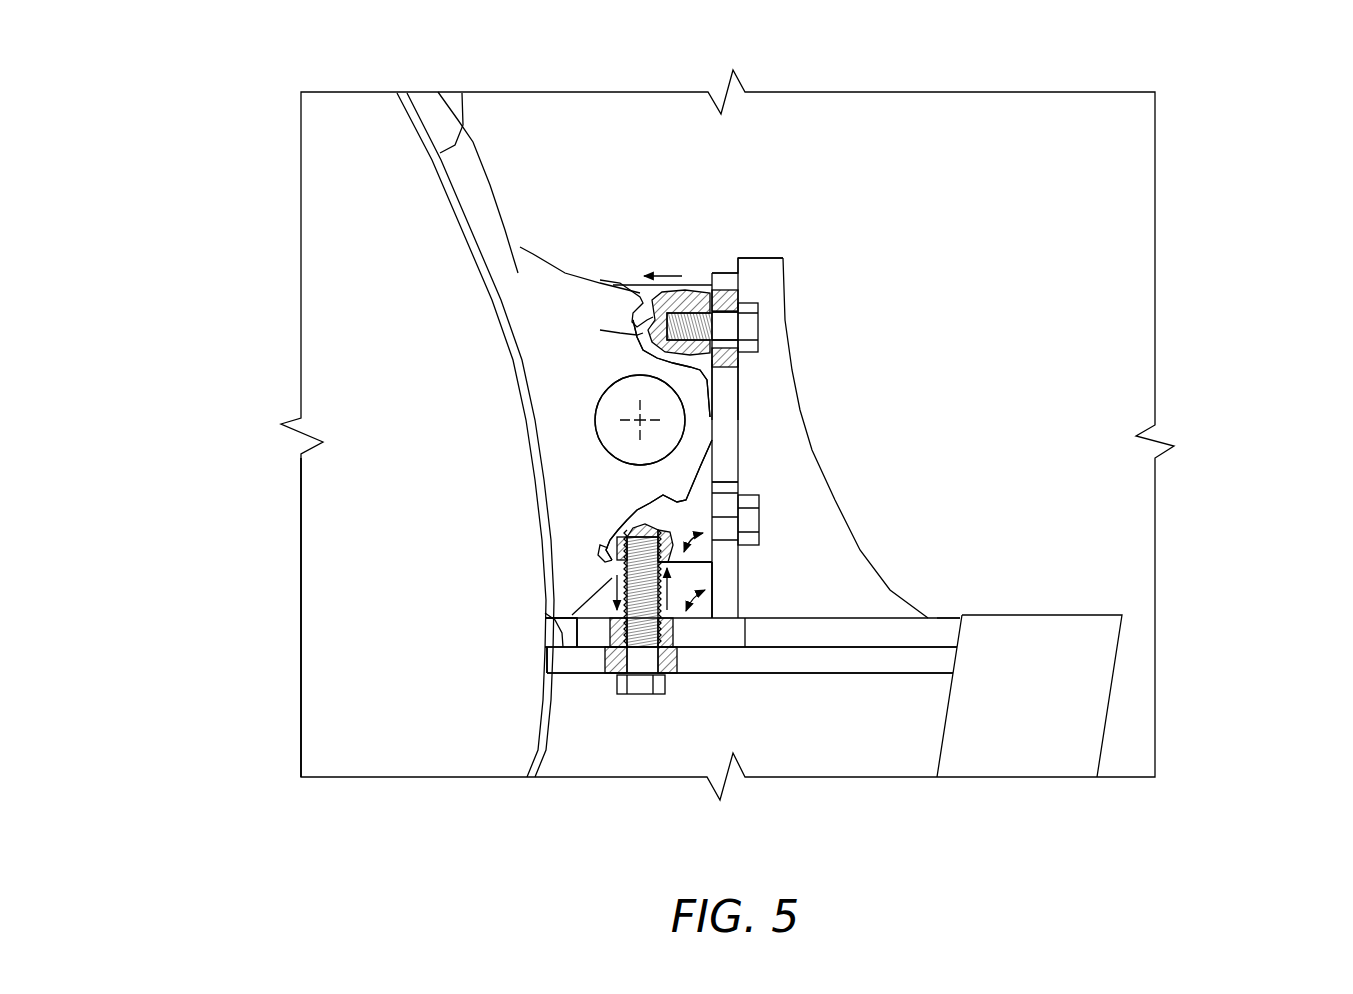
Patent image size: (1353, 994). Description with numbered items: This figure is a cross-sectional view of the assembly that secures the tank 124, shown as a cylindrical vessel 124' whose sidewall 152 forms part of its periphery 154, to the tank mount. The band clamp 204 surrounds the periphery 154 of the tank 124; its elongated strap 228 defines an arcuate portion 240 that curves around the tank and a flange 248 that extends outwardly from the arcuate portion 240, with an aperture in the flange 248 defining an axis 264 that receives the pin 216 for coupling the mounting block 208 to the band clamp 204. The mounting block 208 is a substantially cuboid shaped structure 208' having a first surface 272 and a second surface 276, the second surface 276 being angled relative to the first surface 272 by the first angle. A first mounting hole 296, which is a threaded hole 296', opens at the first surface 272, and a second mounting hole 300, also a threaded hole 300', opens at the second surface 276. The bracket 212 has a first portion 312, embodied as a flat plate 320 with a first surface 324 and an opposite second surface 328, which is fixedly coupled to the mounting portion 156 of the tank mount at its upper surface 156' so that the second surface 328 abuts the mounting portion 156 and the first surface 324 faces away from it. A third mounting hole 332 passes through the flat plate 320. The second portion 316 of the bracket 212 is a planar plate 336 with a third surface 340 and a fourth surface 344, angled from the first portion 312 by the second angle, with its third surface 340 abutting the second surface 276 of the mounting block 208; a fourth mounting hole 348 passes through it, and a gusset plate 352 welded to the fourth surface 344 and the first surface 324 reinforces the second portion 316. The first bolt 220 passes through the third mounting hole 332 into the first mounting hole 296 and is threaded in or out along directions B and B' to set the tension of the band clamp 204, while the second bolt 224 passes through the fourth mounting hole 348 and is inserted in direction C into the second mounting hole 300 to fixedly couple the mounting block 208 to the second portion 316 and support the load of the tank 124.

The tank 124 is at (251, 617).
The cylindrical vessel 124' is at (251, 617).
The sidewall 152 is at (563, 650).
The periphery 154 is at (563, 650).
The mounting portion 156 is at (380, 625).
The upper surface 156' is at (380, 625).
The band clamp 204 is at (474, 143).
The mounting block 208 is at (829, 590).
The cuboid shaped structure 208' is at (829, 590).
The bracket 212 is at (825, 462).
The pin 216 is at (602, 450).
The first bolt 220 is at (640, 698).
The second bolt 224 is at (764, 323).
The elongated strap 228 is at (428, 132).
The arcuate portion 240 is at (460, 125).
The flange 248 is at (520, 247).
The axis 264 is at (600, 433).
The first surface 272 is at (696, 570).
The second surface 276 is at (690, 534).
The first mounting hole 296 is at (448, 501).
The threaded hole 296' is at (448, 500).
The second mounting hole 300 is at (437, 341).
The threaded hole 300' is at (437, 341).
The first portion 312 is at (952, 640).
The second portion 316 is at (725, 270).
The flat plate 320 is at (952, 640).
The first surface 324 is at (938, 635).
The second surface 328 is at (953, 637).
The third mounting hole 332 is at (672, 590).
The planar plate 336 is at (725, 270).
The third surface 340 is at (712, 277).
The fourth surface 344 is at (730, 382).
The fourth mounting hole 348 is at (730, 332).
The gusset plate 352 is at (775, 412).
The direction B is at (747, 696).
The direction B' is at (432, 581).
The direction C is at (682, 273).